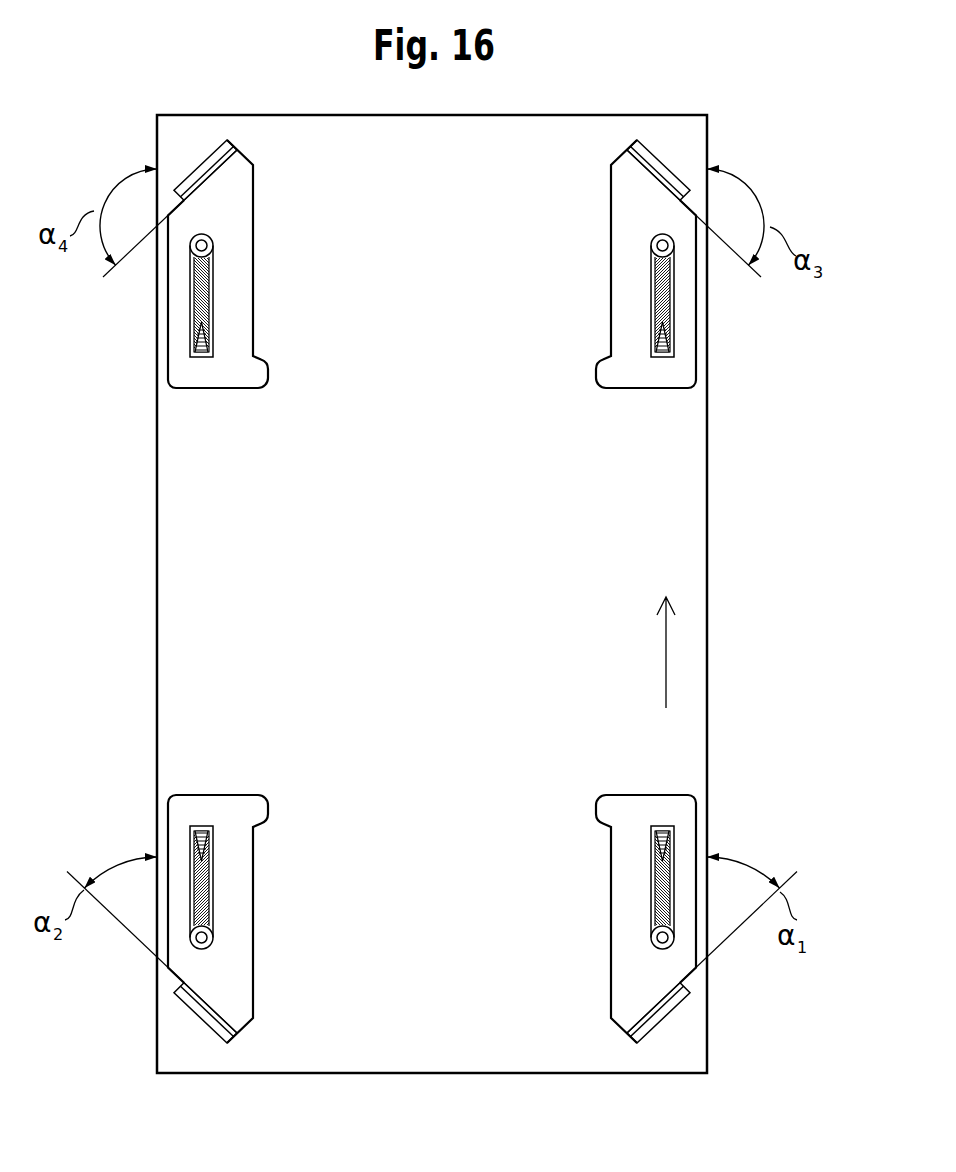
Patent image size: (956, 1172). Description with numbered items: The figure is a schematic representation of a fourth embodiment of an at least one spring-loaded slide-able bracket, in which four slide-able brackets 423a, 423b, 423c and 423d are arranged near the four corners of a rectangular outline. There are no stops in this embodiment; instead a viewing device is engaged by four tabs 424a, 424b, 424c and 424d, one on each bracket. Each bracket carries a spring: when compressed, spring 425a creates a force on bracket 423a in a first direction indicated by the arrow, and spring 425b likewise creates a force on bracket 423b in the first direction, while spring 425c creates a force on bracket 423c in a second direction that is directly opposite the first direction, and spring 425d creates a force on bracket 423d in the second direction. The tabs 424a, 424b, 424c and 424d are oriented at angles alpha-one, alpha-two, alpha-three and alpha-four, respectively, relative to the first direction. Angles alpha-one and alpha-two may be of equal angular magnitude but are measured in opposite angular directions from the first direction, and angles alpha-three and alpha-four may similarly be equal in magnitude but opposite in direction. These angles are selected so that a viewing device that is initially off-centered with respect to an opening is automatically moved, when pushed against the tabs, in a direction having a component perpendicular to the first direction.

The slide-able bracket 423a is at (643, 794).
The slide-able bracket 423b is at (216, 794).
The slide-able bracket 423c is at (638, 390).
The slide-able bracket 423d is at (217, 390).
The tab 424a is at (675, 1012).
The tab 424b is at (190, 1018).
The tab 424c is at (666, 163).
The tab 424d is at (201, 168).
The spring 425a is at (670, 868).
The spring 425b is at (193, 862).
The spring 425c is at (670, 307).
The spring 425d is at (195, 308).